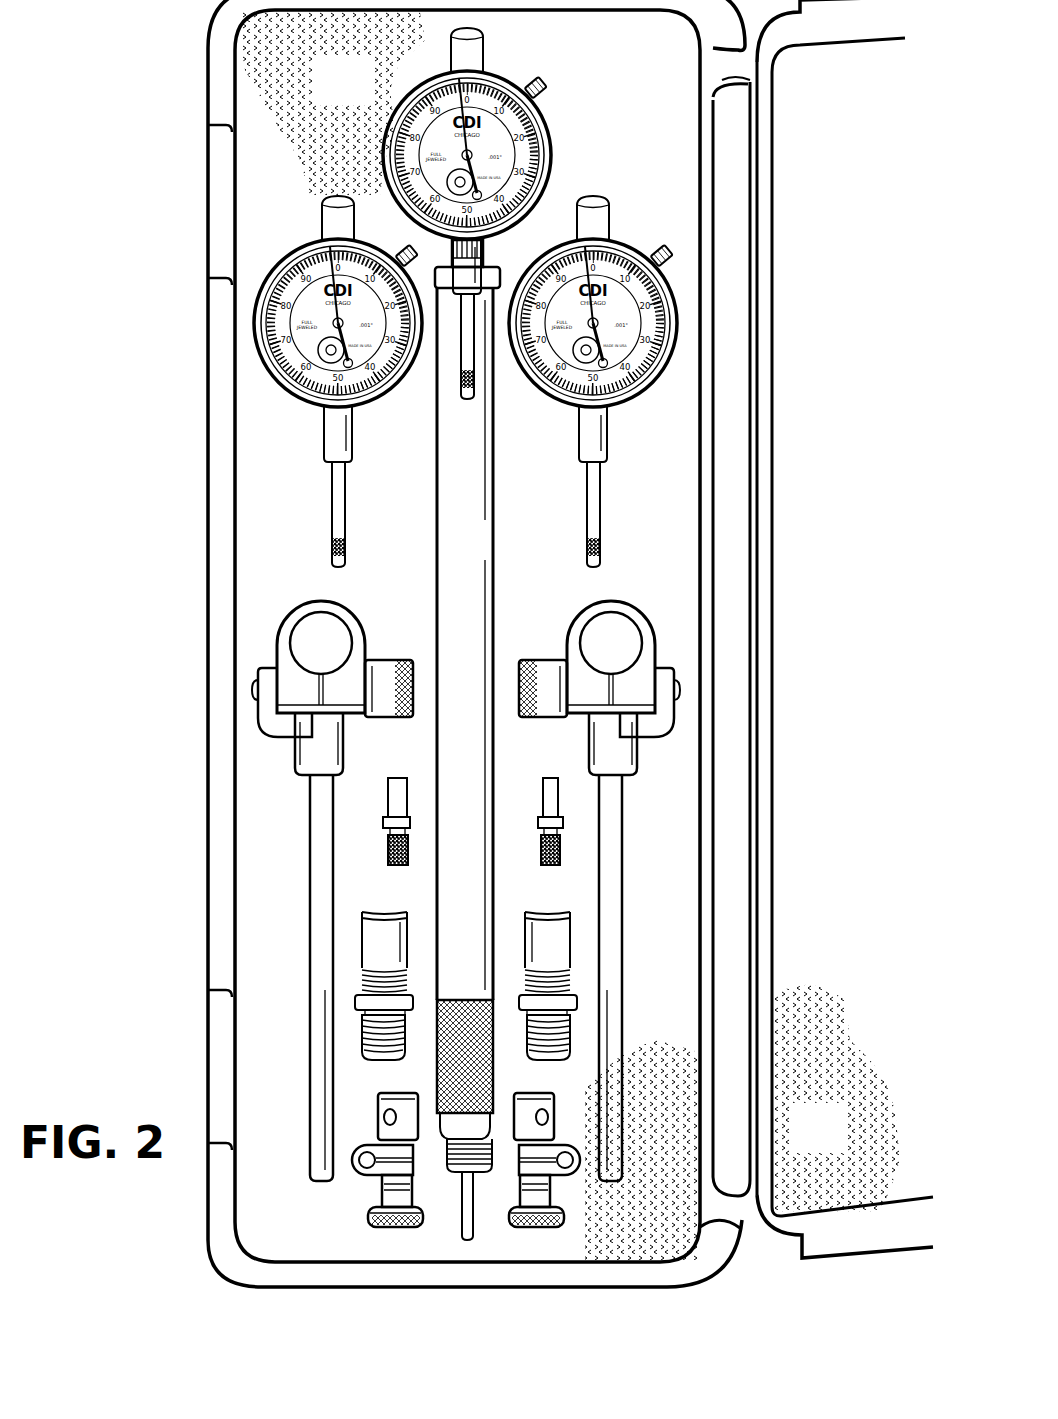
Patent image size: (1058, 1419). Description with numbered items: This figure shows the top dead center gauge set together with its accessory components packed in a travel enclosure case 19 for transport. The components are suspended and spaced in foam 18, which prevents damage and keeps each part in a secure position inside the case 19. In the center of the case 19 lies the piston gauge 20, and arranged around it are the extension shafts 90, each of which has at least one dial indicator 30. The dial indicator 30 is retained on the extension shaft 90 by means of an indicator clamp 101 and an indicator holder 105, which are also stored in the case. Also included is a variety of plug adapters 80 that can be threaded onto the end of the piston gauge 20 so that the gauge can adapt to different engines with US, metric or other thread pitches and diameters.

The foam 18 is at (368, 101).
The travel enclosure case 19 is at (205, 388).
The piston gauge 20 is at (437, 600).
The dial indicator 30 is at (252, 343).
The plug adapter 80 is at (360, 937).
The extension shaft 90 is at (310, 822).
The indicator clamp 101 is at (387, 1228).
The indicator holder 105 is at (565, 797).